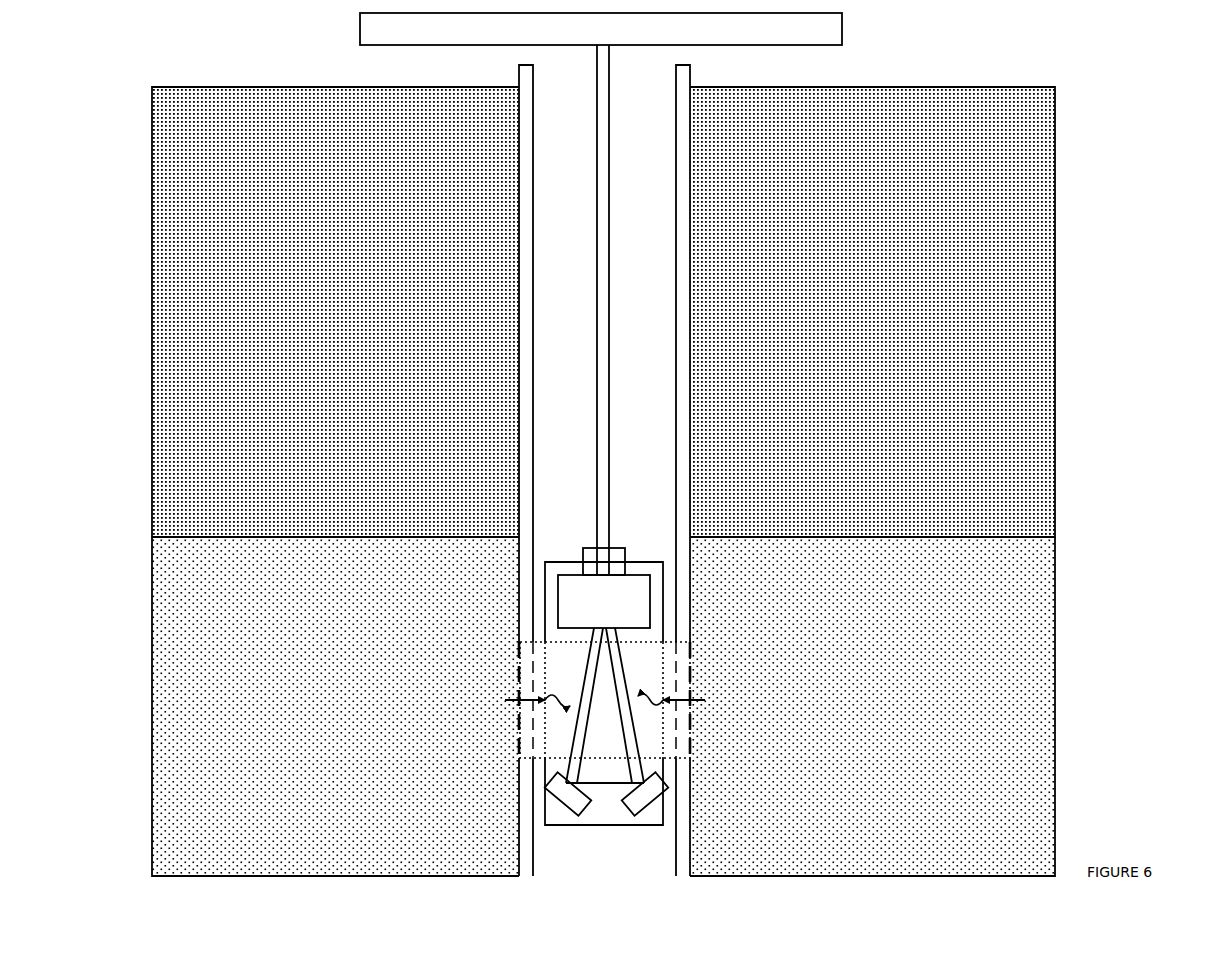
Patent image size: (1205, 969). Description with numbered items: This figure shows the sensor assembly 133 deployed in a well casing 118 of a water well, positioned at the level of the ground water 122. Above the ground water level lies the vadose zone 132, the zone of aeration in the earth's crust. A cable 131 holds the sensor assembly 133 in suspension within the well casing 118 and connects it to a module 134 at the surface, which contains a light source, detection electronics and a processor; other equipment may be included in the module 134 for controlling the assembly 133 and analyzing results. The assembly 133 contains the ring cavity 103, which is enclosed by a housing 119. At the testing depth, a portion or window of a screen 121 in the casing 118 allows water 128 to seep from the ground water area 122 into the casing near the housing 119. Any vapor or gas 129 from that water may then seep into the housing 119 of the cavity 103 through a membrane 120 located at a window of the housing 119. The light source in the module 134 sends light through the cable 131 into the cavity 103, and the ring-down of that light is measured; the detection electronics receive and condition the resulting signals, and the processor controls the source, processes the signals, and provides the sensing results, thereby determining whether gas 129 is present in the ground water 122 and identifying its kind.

The ring cavity 103 is at (618, 748).
The well casing 118 is at (518, 75).
The housing 119 is at (622, 827).
The membrane 120 is at (548, 693).
The screen 121 is at (519, 672).
The ground water area 122 is at (348, 719).
The water 128 is at (510, 700).
The vapor or gas 129 is at (653, 690).
The cable 131 is at (609, 315).
The vadose zone 132 is at (348, 322).
The sensor assembly 133 is at (570, 505).
The module 134 is at (842, 20).